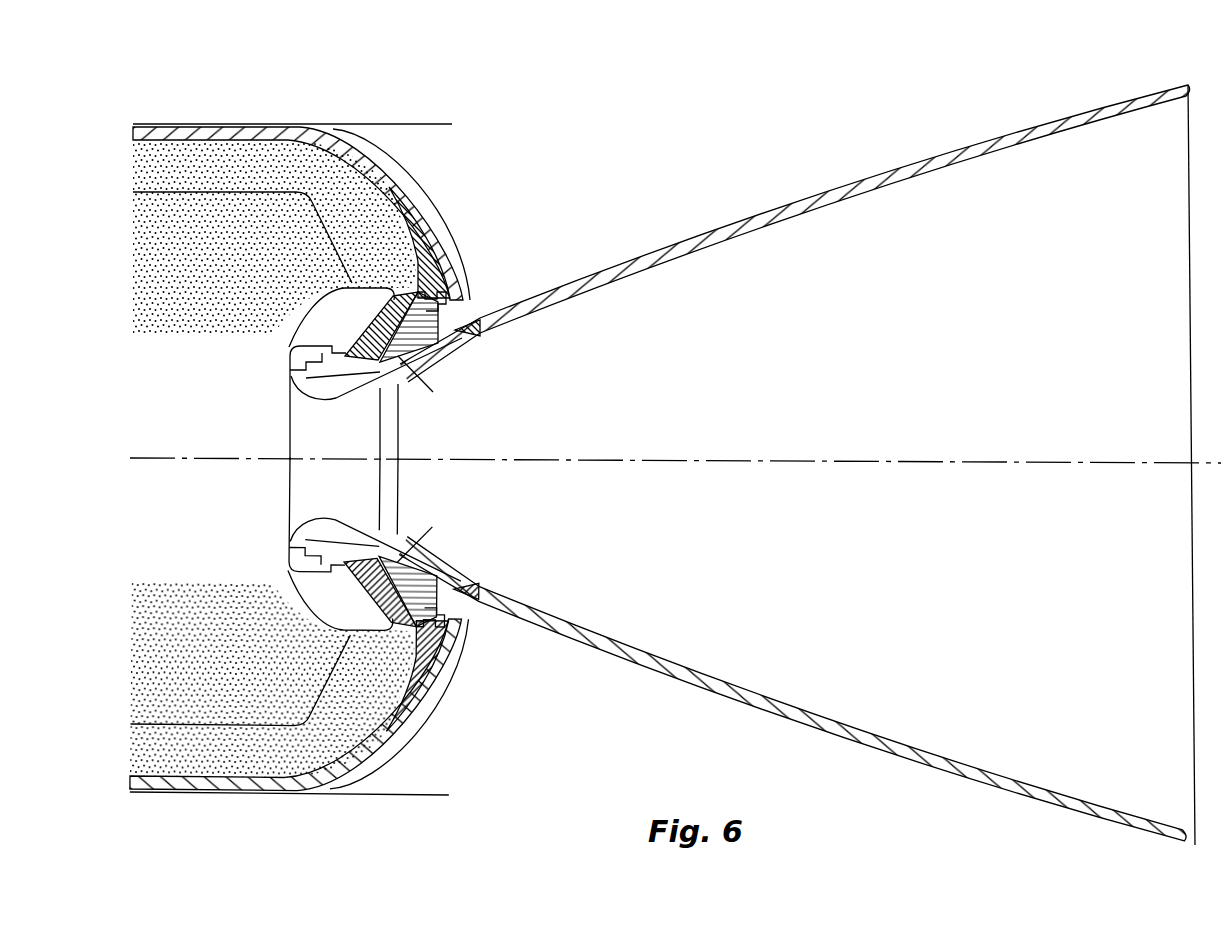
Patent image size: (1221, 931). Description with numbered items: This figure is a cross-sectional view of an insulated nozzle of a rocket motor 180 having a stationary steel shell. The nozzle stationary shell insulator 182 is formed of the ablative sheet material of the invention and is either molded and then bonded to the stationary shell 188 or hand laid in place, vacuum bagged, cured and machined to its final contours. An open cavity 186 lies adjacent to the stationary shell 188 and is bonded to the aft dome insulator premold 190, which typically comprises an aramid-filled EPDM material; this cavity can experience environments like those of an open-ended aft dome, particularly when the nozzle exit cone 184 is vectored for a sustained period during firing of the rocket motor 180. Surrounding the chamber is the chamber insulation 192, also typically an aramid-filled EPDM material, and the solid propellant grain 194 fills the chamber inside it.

The rocket motor 180 is at (667, 453).
The nozzle stationary shell insulator 182 is at (410, 360).
The nozzle exit cone 184 is at (824, 194).
The open cavity 186 is at (352, 306).
The stationary shell 188 is at (447, 312).
The aft dome insulator premold 190 is at (433, 252).
The chamber insulation 192 is at (392, 157).
The solid propellant grain 194 is at (192, 218).